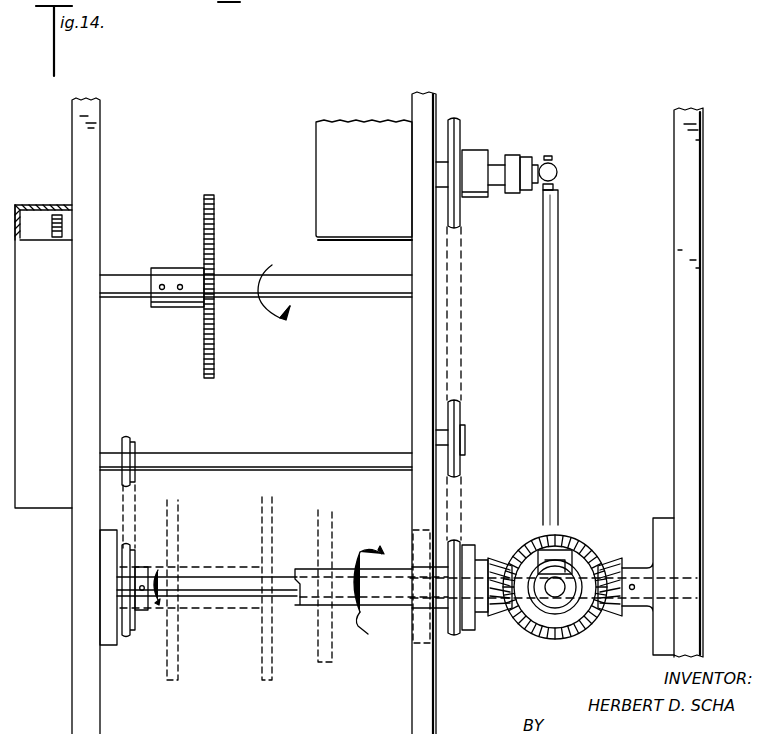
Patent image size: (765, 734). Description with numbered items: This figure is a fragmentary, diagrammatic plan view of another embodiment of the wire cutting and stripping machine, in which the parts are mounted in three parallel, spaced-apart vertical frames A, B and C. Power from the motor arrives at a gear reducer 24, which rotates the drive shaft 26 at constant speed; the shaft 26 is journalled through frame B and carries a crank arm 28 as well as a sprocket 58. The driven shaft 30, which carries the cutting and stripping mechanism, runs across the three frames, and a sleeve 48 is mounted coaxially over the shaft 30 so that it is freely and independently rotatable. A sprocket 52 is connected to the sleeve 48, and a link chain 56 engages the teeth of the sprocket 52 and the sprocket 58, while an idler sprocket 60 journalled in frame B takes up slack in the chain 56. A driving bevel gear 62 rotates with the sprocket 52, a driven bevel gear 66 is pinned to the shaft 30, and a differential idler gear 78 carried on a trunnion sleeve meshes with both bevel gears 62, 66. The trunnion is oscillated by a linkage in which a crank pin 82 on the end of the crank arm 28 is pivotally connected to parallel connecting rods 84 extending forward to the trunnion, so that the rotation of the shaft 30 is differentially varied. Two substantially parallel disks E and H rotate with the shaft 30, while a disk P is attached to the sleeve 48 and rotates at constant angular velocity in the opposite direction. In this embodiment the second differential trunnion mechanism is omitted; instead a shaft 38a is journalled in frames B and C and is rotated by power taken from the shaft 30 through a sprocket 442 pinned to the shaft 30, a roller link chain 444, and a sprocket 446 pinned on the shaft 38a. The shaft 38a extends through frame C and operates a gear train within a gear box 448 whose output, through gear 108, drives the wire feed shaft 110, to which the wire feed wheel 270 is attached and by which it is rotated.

The gear reducer 24 is at (380, 184).
The drive shaft 26 is at (512, 158).
The crank arm 28 is at (526, 155).
The driven shaft 30 is at (282, 578).
The shaft 38a is at (322, 468).
The sleeve 48 is at (350, 570).
The sprocket 52 is at (455, 540).
The link chain 56 is at (458, 348).
The sprocket 58 is at (460, 130).
The idler sprocket 60 is at (455, 440).
The driving bevel gear 62 is at (502, 614).
The driven bevel gear 66 is at (604, 624).
The differential idler gear 78 is at (574, 648).
The crank pin 82 is at (554, 166).
The connecting rods 84 is at (560, 282).
The gear 108 is at (72, 228).
The wire feed shaft 110 is at (378, 292).
The wire feed wheel 270 is at (214, 240).
The sprocket 442 is at (145, 622).
The roller link chain 444 is at (138, 508).
The sprocket 446 is at (135, 450).
The gear box 448 is at (58, 366).
The frame A is at (696, 252).
The frame B is at (436, 714).
The frame C is at (75, 713).
The disk H is at (178, 682).
The disk E is at (262, 680).
The disk P is at (328, 664).